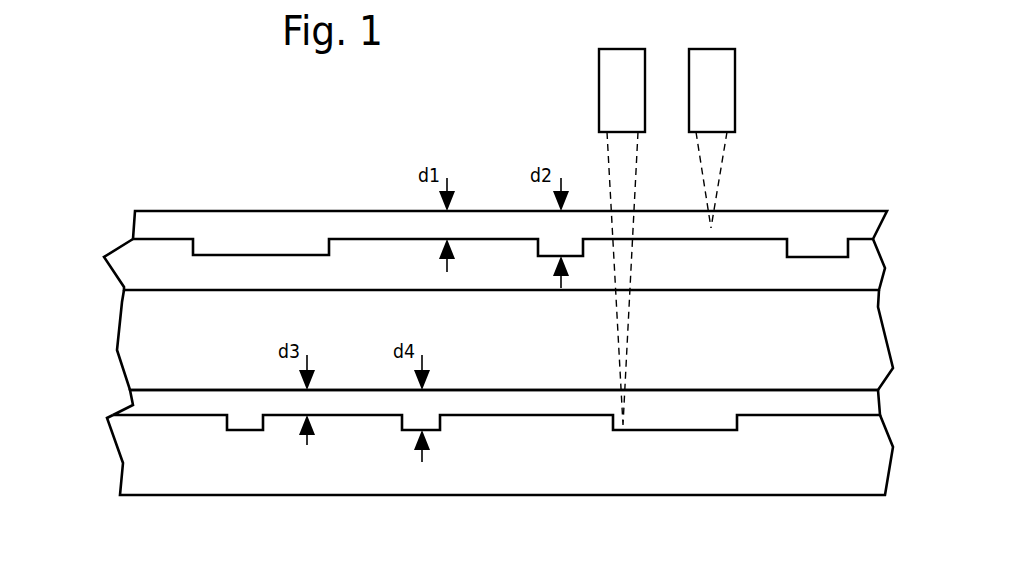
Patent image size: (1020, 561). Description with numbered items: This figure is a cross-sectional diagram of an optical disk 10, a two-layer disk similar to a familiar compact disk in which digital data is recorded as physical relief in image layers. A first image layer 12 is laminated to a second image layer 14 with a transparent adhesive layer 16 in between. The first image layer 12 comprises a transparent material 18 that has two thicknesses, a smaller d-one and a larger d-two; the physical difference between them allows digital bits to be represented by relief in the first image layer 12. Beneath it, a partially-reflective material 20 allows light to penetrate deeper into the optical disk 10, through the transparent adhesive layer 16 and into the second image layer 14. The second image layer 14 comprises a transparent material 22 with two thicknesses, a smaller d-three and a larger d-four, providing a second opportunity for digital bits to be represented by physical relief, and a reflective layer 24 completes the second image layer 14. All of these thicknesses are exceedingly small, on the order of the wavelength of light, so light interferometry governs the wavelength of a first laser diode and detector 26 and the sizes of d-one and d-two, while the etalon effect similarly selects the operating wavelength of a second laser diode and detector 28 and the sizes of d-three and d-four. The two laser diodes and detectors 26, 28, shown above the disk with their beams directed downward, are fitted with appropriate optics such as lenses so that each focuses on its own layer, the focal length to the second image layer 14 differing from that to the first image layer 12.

The optical disk 10 is at (233, 101).
The first image layer 12 is at (90, 210).
The second image layer 14 is at (82, 388).
The transparent adhesive layer 16 is at (755, 353).
The transparent material 18 is at (833, 237).
The partially-reflective material 20 is at (722, 276).
The transparent material 22 is at (688, 421).
The reflective layer 24 is at (713, 473).
The first laser diode and detector 26 is at (735, 80).
The second laser diode and detector 28 is at (599, 64).